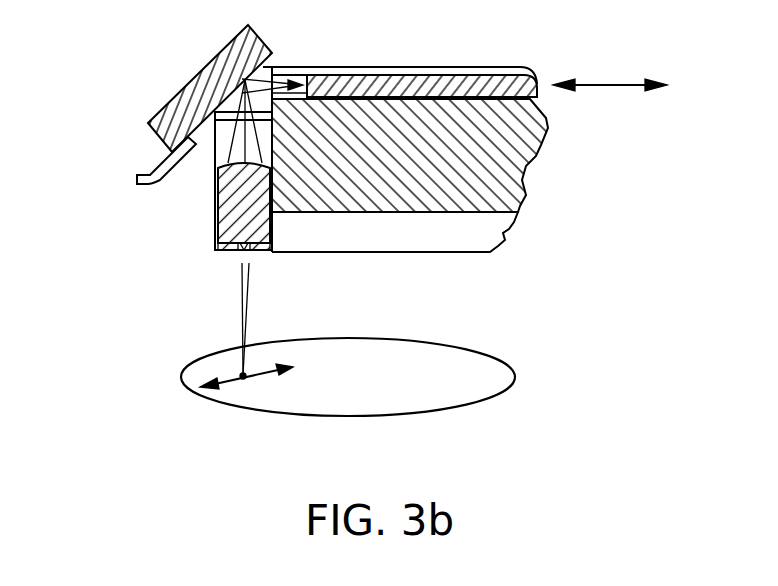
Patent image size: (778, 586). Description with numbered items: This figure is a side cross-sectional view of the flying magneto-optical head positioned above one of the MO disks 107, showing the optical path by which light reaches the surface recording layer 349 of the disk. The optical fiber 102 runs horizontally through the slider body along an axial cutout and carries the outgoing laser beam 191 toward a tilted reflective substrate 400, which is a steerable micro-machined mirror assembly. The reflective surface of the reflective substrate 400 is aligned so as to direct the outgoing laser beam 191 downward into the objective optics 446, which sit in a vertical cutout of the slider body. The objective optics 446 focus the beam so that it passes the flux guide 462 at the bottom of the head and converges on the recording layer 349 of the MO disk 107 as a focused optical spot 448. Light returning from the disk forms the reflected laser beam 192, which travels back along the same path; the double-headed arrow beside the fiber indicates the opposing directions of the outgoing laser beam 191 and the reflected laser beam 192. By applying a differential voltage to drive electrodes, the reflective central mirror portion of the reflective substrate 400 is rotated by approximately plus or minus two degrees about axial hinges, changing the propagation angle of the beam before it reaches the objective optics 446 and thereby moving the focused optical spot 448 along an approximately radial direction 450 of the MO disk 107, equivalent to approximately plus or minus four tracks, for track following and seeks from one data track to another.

The optical fiber 102 is at (427, 67).
The reflective substrate 400 is at (162, 117).
The objective optics 446 is at (233, 205).
The flux guide 462 is at (241, 247).
The focused optical spot 448 is at (248, 380).
The radial direction 450 is at (237, 382).
The MO disk 107 is at (183, 374).
The surface recording layer 349 is at (415, 398).
The outgoing laser beam 191 is at (614, 86).
The reflected laser beam 192 is at (614, 109).